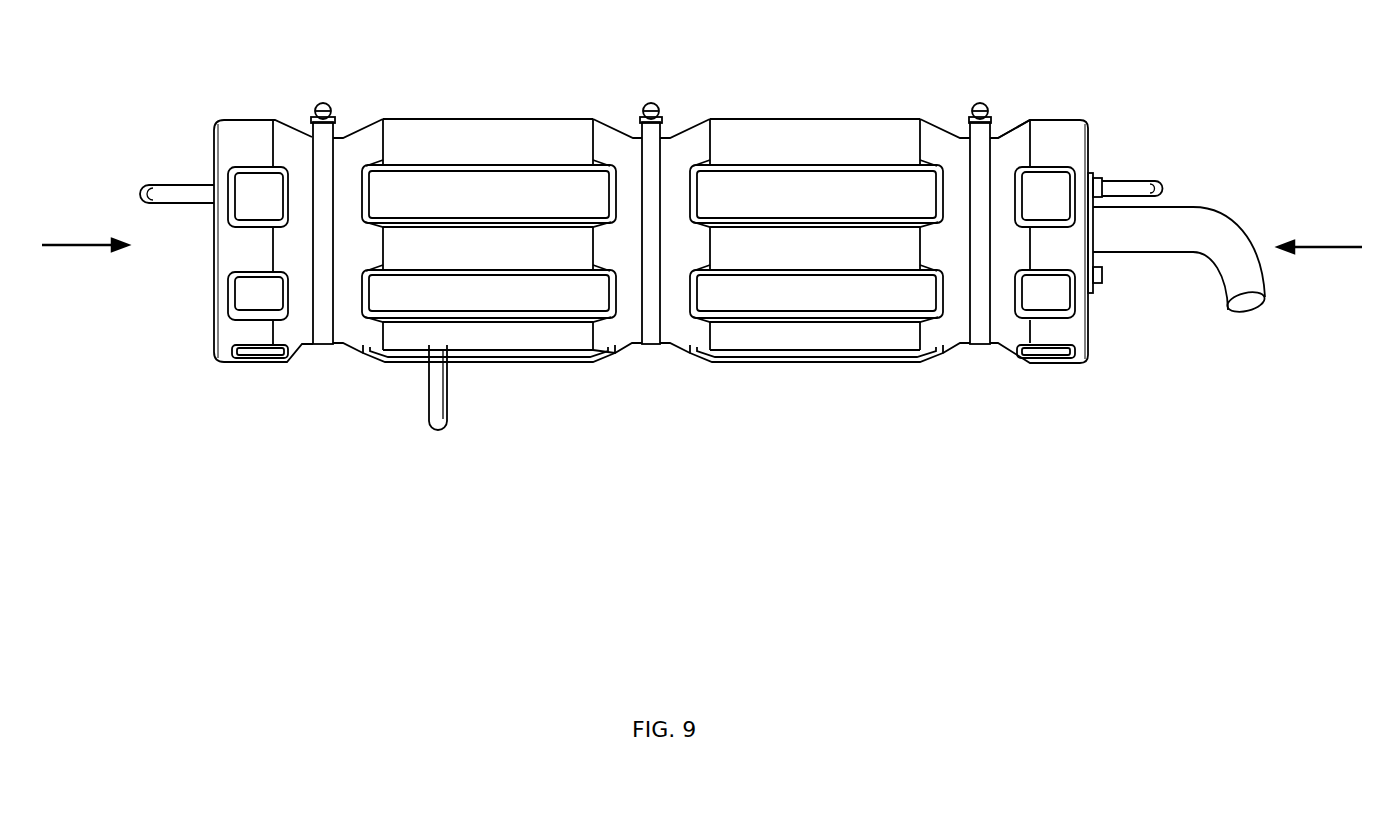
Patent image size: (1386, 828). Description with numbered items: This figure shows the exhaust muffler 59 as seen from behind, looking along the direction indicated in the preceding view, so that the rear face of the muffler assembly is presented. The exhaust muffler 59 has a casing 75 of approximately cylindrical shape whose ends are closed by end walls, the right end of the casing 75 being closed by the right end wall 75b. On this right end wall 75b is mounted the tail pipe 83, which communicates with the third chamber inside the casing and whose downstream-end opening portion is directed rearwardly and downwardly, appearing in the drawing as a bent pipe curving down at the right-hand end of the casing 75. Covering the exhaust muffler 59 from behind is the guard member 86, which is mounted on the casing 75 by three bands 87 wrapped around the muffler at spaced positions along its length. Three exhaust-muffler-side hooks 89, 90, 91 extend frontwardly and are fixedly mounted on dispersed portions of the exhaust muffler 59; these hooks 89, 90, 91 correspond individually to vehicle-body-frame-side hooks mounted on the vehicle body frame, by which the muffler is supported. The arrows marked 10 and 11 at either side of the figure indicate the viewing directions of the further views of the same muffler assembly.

The exhaust muffler 59 is at (951, 118).
The casing 75 is at (997, 128).
The right end wall 75b is at (1093, 168).
The tail pipe 83 is at (1193, 225).
The guard member 86 is at (475, 135).
The bands 87 is at (325, 173).
The exhaust-muffler-side hook 89 is at (438, 383).
The exhaust-muffler-side hook 90 is at (181, 192).
The exhaust-muffler-side hook 91 is at (1115, 188).
The view direction arrow for FIG. 10 is at (1325, 226).
The view direction arrow for FIG. 11 is at (84, 225).